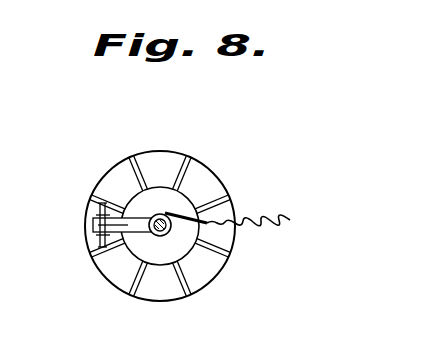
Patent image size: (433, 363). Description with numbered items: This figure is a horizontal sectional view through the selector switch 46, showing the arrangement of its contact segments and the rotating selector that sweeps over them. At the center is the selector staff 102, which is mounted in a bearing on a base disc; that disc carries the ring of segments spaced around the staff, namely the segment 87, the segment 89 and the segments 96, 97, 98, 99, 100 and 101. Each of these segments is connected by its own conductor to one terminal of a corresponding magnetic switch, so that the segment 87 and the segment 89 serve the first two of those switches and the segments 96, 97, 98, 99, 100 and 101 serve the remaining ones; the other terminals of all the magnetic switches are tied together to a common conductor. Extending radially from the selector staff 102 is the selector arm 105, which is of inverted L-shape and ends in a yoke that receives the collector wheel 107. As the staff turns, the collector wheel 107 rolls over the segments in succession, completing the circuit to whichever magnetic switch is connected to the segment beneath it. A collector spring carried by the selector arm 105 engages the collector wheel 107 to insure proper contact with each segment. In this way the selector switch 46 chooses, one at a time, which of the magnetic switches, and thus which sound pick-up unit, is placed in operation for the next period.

The selector switch 46 is at (221, 182).
The segment 87 is at (157, 155).
The segment 89 is at (118, 175).
The segment 96 is at (93, 208).
The segment 97 is at (123, 275).
The segment 98 is at (158, 288).
The segment 99 is at (200, 275).
The segment 100 is at (236, 213).
The segment 101 is at (193, 172).
The selector staff 102 is at (154, 232).
The selector arm 105 is at (103, 226).
The collector wheel 107 is at (99, 233).